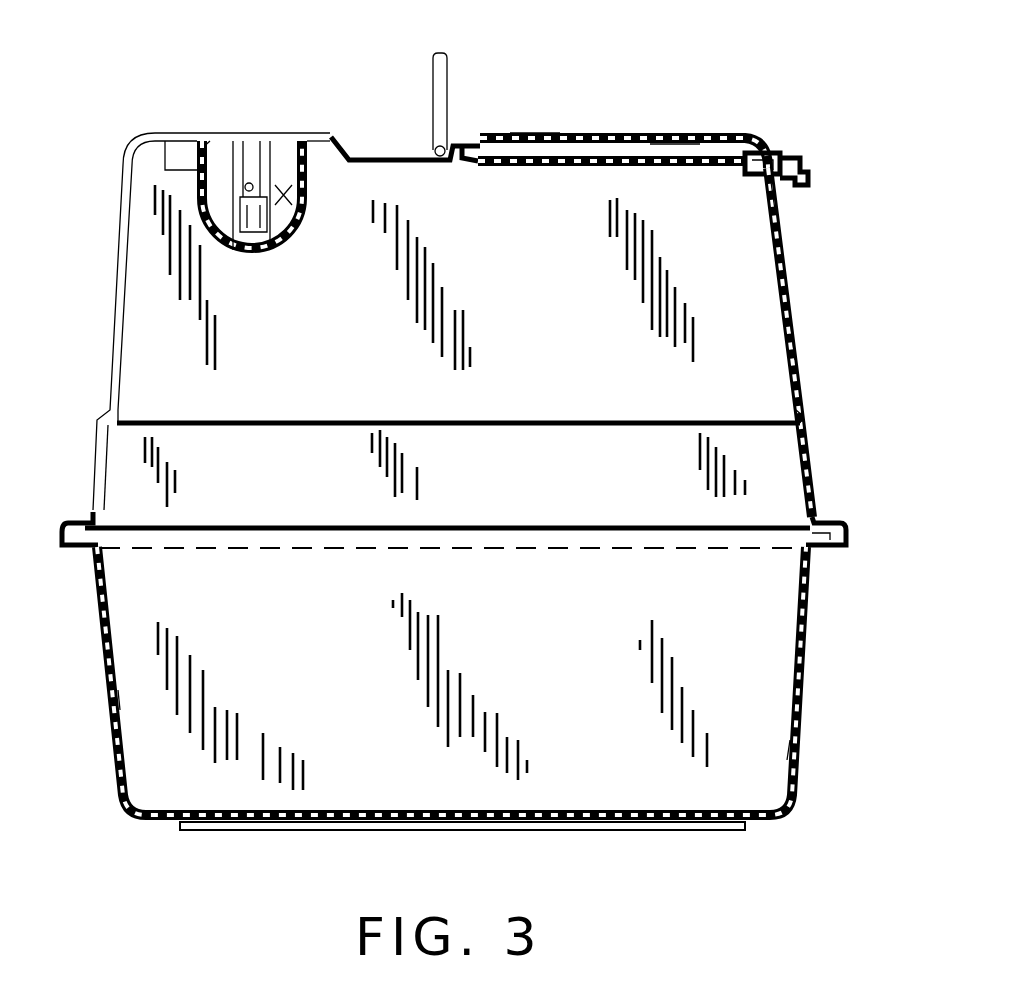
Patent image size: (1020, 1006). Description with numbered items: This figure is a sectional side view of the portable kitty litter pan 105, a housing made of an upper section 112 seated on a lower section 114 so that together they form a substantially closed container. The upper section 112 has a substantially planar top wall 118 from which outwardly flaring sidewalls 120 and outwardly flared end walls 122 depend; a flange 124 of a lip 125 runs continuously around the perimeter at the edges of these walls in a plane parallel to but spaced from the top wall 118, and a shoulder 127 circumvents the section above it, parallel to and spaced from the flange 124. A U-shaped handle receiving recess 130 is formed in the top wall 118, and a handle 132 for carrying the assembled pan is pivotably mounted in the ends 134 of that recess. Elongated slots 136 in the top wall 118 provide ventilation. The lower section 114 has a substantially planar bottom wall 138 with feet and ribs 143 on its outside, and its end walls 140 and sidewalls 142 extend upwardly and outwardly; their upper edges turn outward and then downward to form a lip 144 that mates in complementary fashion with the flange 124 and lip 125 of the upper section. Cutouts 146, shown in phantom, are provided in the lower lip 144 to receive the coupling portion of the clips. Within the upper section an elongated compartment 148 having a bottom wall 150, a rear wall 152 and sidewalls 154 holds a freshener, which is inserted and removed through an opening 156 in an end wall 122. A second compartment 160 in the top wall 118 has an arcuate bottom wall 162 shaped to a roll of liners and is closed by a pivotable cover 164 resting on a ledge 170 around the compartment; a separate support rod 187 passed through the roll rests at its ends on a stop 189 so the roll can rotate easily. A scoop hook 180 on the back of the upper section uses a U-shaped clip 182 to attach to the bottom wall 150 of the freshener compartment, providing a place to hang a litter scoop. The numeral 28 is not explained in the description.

The upper shell side wall 28 is at (115, 237).
The portable kitty litter pan 105 is at (55, 562).
The upper section 112 is at (795, 270).
The lower section 114 is at (798, 715).
The top wall 118 is at (625, 135).
The sidewalls 120 is at (567, 360).
The end walls 122 is at (800, 335).
The flange 124 is at (827, 510).
The lip 125 is at (840, 527).
The shoulder 127 is at (803, 420).
The handle receiving recess 130 is at (393, 150).
The handle 132 is at (445, 92).
The ends of the recess 134 is at (433, 148).
The elongated slots 136 is at (530, 133).
The bottom wall 138 is at (628, 825).
The end walls 140 is at (120, 692).
The sidewalls 142 is at (597, 716).
The feet and ribs 143 is at (290, 830).
The lip 144 is at (817, 547).
The cutouts 146 is at (287, 545).
The elongated compartment 148 is at (673, 150).
The bottom wall of compartment 150 is at (650, 167).
The rear wall 152 is at (472, 165).
The sidewalls of compartment 154 is at (707, 148).
The opening 156 is at (770, 158).
The compartment 160 is at (280, 183).
The arcuate bottom wall 162 is at (247, 250).
The pivotable cover 164 is at (278, 84).
The ledge 170 is at (185, 133).
The scoop hook 180 is at (807, 170).
The U-shaped clip 182 is at (755, 185).
The support rod 187 is at (203, 318).
The stop 189 is at (267, 233).